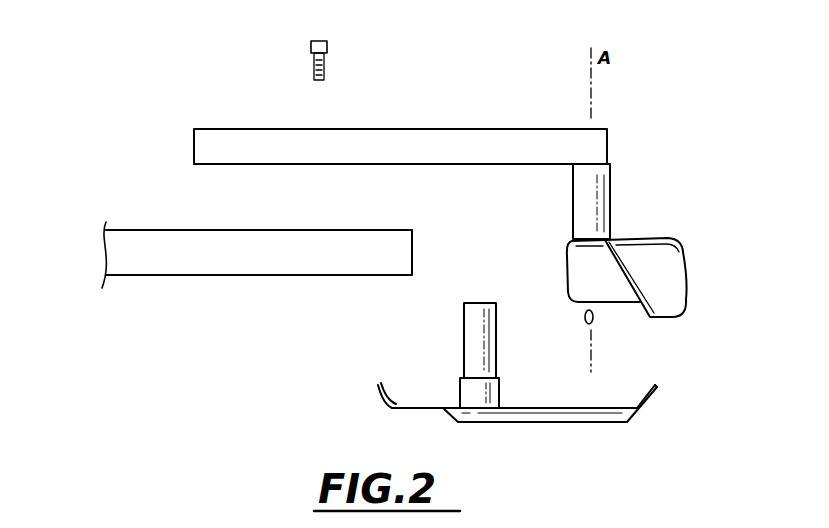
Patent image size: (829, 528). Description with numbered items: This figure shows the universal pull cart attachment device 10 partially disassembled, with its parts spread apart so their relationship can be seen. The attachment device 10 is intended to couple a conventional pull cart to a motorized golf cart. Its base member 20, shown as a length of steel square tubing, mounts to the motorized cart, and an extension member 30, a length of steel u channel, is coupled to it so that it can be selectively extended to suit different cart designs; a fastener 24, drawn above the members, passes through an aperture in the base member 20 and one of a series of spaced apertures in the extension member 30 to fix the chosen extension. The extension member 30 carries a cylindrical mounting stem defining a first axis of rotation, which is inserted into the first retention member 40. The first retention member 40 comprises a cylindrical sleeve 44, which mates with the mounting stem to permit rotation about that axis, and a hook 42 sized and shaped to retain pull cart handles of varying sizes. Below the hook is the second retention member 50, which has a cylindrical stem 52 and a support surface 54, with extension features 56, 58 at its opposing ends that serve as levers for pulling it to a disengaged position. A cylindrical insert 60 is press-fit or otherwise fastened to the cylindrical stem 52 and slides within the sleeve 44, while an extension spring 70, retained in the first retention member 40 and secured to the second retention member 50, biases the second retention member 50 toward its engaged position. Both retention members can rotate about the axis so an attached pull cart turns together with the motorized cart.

The attachment device 10 is at (102, 88).
The base member 20 is at (188, 275).
The fastener 24 is at (327, 45).
The extension member 30 is at (252, 135).
The first retention member 40 is at (732, 216).
The hook 42 is at (668, 283).
The cylindrical sleeve 44 is at (608, 197).
The second retention member 50 is at (652, 466).
The cylindrical stem 52 is at (462, 390).
The support surface 54 is at (527, 410).
The extension feature 56 is at (377, 389).
The extension feature 58 is at (659, 393).
The cylindrical insert 60 is at (474, 337).
The extension spring 70 is at (594, 316).